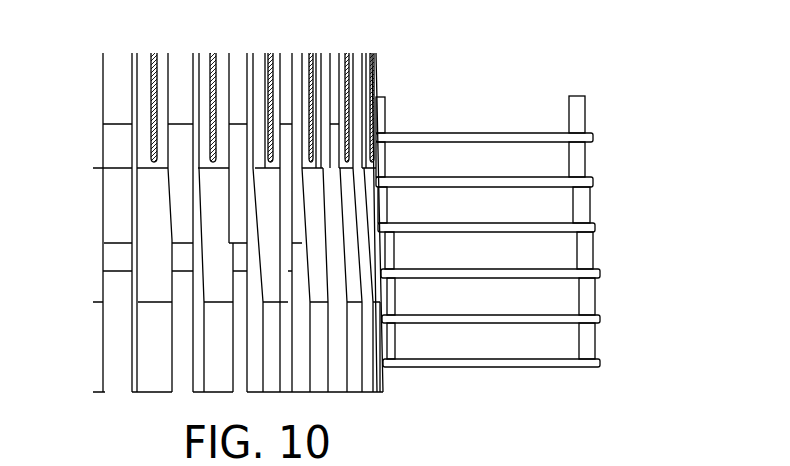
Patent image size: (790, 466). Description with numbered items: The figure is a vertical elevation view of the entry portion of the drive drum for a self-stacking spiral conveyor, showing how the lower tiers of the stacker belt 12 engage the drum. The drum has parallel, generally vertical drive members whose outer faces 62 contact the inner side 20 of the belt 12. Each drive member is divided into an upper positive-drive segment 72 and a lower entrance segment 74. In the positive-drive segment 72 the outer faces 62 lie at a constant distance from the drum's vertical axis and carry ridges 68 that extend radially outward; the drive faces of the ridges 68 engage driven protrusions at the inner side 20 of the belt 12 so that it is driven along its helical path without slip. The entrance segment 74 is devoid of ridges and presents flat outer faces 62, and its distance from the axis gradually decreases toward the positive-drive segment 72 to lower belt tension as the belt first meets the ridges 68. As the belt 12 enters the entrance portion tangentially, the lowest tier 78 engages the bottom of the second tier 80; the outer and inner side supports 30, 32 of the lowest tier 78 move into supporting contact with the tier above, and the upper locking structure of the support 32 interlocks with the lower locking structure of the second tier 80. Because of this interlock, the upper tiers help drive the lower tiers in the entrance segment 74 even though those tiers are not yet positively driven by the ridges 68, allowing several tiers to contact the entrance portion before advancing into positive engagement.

The stacker belt 12 is at (515, 363).
The inner side 20 is at (397, 362).
The outer side support 30 is at (386, 112).
The inner side support 32 is at (592, 243).
The outer face 62 is at (377, 74).
The ridge 68 is at (152, 88).
The positive-drive segment 72 is at (76, 63).
The entrance segment 74 is at (76, 170).
The lowest tier 78 is at (623, 322).
The second tier 80 is at (623, 275).